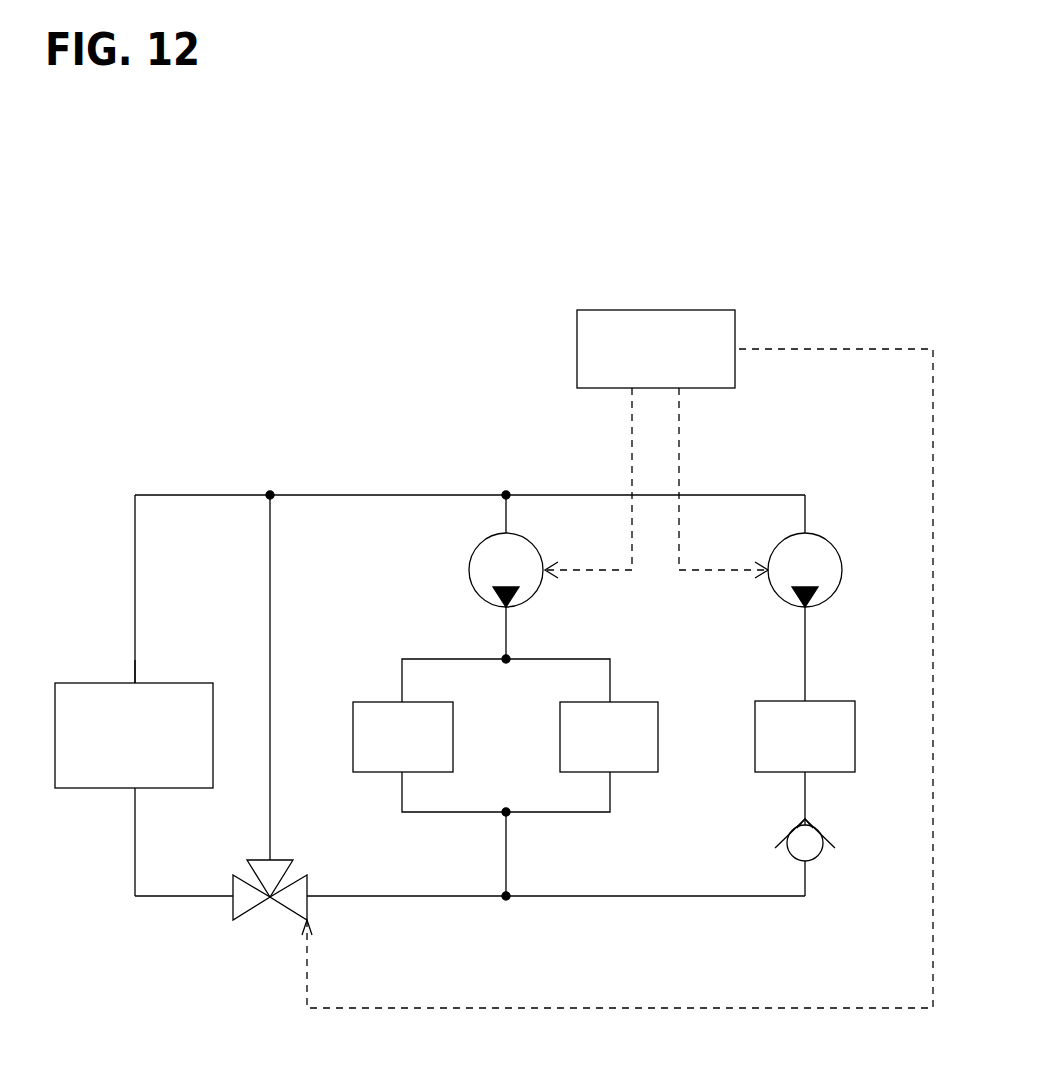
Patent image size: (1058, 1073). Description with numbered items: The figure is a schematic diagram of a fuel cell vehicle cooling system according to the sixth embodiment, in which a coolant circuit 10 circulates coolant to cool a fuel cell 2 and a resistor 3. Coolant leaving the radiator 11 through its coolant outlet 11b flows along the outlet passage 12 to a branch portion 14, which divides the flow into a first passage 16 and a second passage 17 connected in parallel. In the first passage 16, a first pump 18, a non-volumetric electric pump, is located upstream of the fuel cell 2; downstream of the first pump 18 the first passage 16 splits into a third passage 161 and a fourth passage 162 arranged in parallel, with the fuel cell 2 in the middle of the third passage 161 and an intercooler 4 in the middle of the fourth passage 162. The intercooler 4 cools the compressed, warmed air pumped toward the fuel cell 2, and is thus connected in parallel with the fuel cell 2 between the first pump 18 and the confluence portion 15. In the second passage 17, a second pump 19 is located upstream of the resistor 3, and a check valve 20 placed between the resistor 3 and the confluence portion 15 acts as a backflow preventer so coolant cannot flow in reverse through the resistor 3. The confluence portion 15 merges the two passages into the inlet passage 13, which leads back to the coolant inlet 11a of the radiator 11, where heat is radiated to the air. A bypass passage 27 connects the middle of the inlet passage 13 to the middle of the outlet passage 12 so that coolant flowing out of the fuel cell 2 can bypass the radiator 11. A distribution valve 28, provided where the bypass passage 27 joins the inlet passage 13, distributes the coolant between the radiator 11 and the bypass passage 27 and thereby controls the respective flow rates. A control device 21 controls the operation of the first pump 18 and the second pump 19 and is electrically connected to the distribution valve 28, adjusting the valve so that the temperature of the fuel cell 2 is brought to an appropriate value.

The fuel cell 2 is at (659, 720).
The resistor 3 is at (856, 718).
The intercooler 4 is at (352, 720).
The coolant circuit 10 is at (133, 563).
The radiator 11 is at (54, 710).
The coolant inlet 11a is at (133, 790).
The coolant outlet 11b is at (133, 682).
The outlet passage 12 is at (200, 494).
The inlet passage 13 is at (383, 898).
The branch portion 14 is at (504, 492).
The confluence portion 15 is at (506, 898).
The first passage 16 is at (504, 631).
The third passage 161 is at (612, 658).
The fourth passage 162 is at (402, 658).
The second passage 17 is at (806, 657).
The first pump 18 is at (469, 558).
The second pump 19 is at (842, 558).
The check valve 20 is at (830, 840).
The control device 21 is at (705, 309).
The bypass passage 27 is at (268, 622).
The distribution valve 28 is at (243, 912).